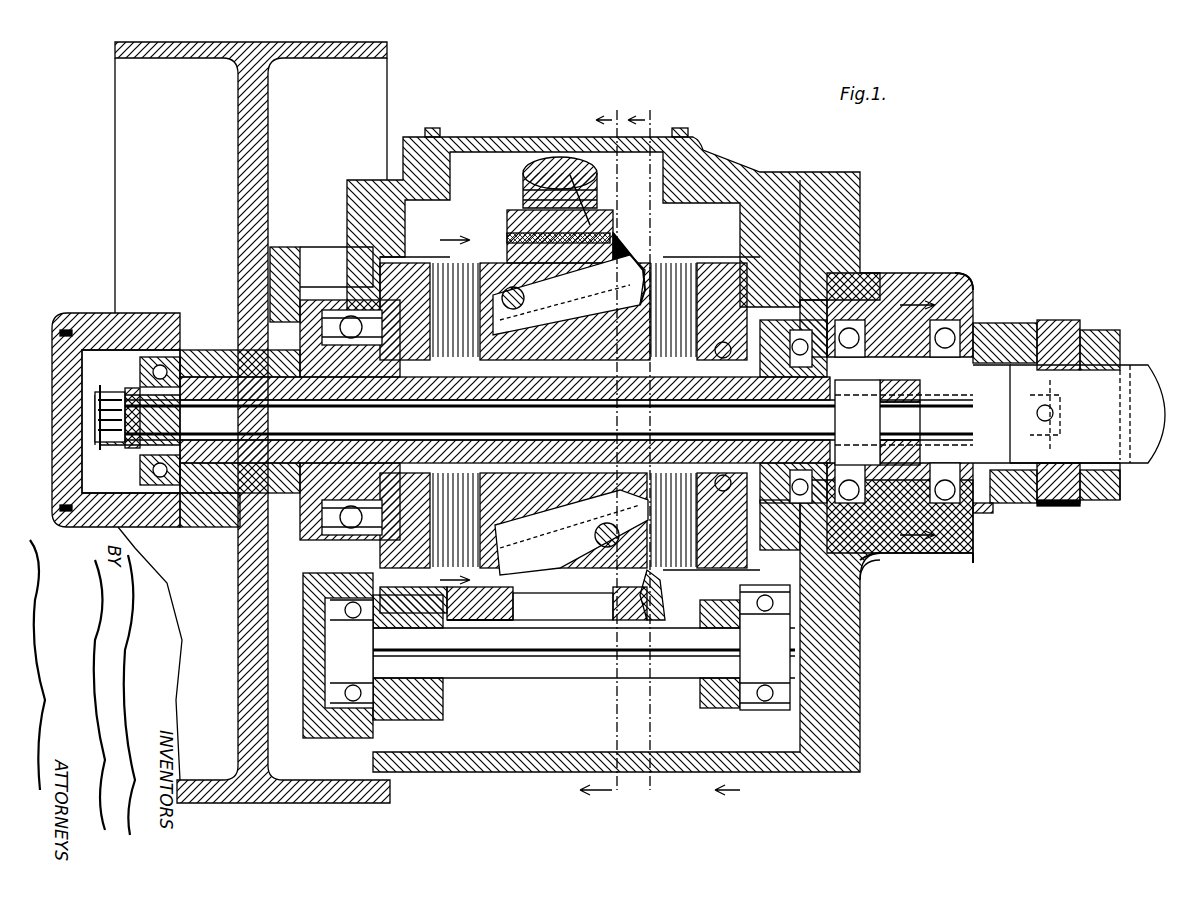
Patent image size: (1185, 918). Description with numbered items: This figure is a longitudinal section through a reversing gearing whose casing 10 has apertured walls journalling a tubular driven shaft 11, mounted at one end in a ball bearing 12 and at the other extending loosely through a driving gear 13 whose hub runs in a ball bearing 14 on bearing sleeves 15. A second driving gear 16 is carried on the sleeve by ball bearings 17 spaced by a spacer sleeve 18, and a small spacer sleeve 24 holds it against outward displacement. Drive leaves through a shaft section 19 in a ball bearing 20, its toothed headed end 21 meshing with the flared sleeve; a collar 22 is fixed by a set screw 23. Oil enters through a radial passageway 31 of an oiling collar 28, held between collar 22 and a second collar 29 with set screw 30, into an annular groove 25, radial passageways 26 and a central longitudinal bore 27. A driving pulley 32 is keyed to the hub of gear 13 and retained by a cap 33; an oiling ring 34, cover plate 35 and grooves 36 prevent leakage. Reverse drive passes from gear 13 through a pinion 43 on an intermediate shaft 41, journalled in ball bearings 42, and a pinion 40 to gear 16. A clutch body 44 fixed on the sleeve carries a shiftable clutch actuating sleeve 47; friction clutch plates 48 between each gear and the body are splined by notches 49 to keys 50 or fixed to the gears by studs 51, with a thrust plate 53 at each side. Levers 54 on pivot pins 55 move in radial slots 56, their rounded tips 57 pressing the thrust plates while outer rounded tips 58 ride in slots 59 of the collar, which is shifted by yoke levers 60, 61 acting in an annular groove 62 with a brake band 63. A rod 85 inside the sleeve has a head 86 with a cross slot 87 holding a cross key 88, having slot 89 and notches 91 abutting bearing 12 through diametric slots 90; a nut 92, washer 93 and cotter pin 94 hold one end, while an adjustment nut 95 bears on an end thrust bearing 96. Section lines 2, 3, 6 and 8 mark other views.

The section line 2- 2 is at (599, 452).
The section line 3- 3 is at (688, 452).
The section line 6- 6 is at (917, 421).
The section line 8- 8 is at (455, 414).
The casing 10 is at (772, 174).
The driven shaft 11 is at (240, 520).
The ball bearing 12 is at (862, 300).
The driving gear 13 is at (413, 273).
The ball bearing 14 is at (255, 575).
The bearing sleeves 15 is at (262, 540).
The second driving gear 16 is at (712, 270).
The ball bearings 17 is at (855, 272).
The spacer sleeve 18 is at (858, 570).
The shaft section 19 is at (1130, 380).
The ball bearing 20 is at (965, 555).
The headed end 21 is at (985, 340).
The collar 22 is at (1000, 335).
The set screw 23 is at (985, 512).
The spacer sleeve 24 is at (885, 560).
The annular groove 25 is at (1060, 445).
The radial passageways 26 is at (1055, 413).
The central longitudinal bore 27 is at (1010, 430).
The oiling collar 28 is at (1070, 506).
The second collar 29 is at (1122, 492).
The set screw 30 is at (1100, 340).
The radial passageway 31 is at (1060, 340).
The driving pulley 32 is at (360, 100).
The cap 33 is at (162, 313).
The oiling ring 34 is at (300, 320).
The cover plate 35 is at (280, 247).
The grooves 36 is at (322, 328).
The pinion 40 is at (590, 560).
The intermediate shaft 41 is at (545, 680).
The ball bearings 42 is at (345, 715).
The pinion 43 is at (450, 705).
The clutch body 44 is at (628, 250).
The shiftable clutch actuating sleeve 47 is at (495, 263).
The friction clutch plates 48 is at (652, 595).
The notches 49 is at (630, 368).
The keys 50 is at (552, 420).
The studs 51 is at (672, 252).
The thrust plate 53 is at (564, 524).
The levers 54 is at (547, 603).
The pivot pins 55 is at (526, 300).
The radial slots 56 is at (640, 240).
The rounded tip 57 is at (585, 310).
The rounded tip 58 is at (492, 620).
The slots 59 is at (520, 622).
The outer yoke lever 60 is at (525, 175).
The inner yoke lever 61 is at (535, 205).
The annular groove 62 is at (572, 205).
The brake band 63 is at (470, 250).
The rod 85 is at (180, 527).
The head 86 is at (850, 450).
The cross slot 87 is at (918, 440).
The cross key 88 is at (880, 300).
The slot 89 is at (918, 400).
The diametric slots 90 is at (945, 310).
The notches 91 is at (905, 553).
The nut 92 is at (92, 527).
The washer 93 is at (140, 527).
The cotter pin 94 is at (102, 452).
The adjustment nut 95 is at (130, 313).
The end thrust bearing 96 is at (182, 322).